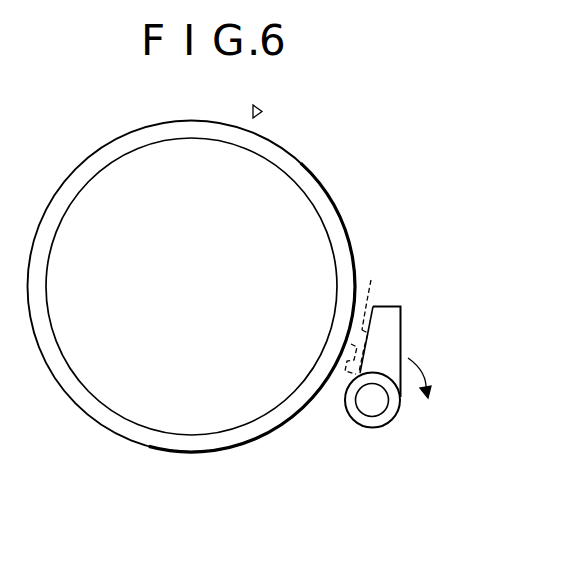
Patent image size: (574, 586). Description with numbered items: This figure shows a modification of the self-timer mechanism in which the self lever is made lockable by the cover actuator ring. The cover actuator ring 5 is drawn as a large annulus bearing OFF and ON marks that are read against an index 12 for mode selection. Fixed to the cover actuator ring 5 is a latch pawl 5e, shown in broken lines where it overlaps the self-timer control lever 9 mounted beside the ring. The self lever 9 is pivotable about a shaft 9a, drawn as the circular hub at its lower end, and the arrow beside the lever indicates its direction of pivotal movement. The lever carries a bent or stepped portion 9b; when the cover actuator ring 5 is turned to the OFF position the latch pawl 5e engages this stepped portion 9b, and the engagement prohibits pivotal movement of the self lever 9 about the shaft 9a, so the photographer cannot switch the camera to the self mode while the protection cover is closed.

The cover actuator ring 5 is at (200, 445).
The latch pawl 5e is at (374, 311).
The self-timer control lever 9 is at (399, 322).
The shaft 9a is at (378, 398).
The stepped portion 9b is at (345, 371).
The index 12 is at (266, 111).